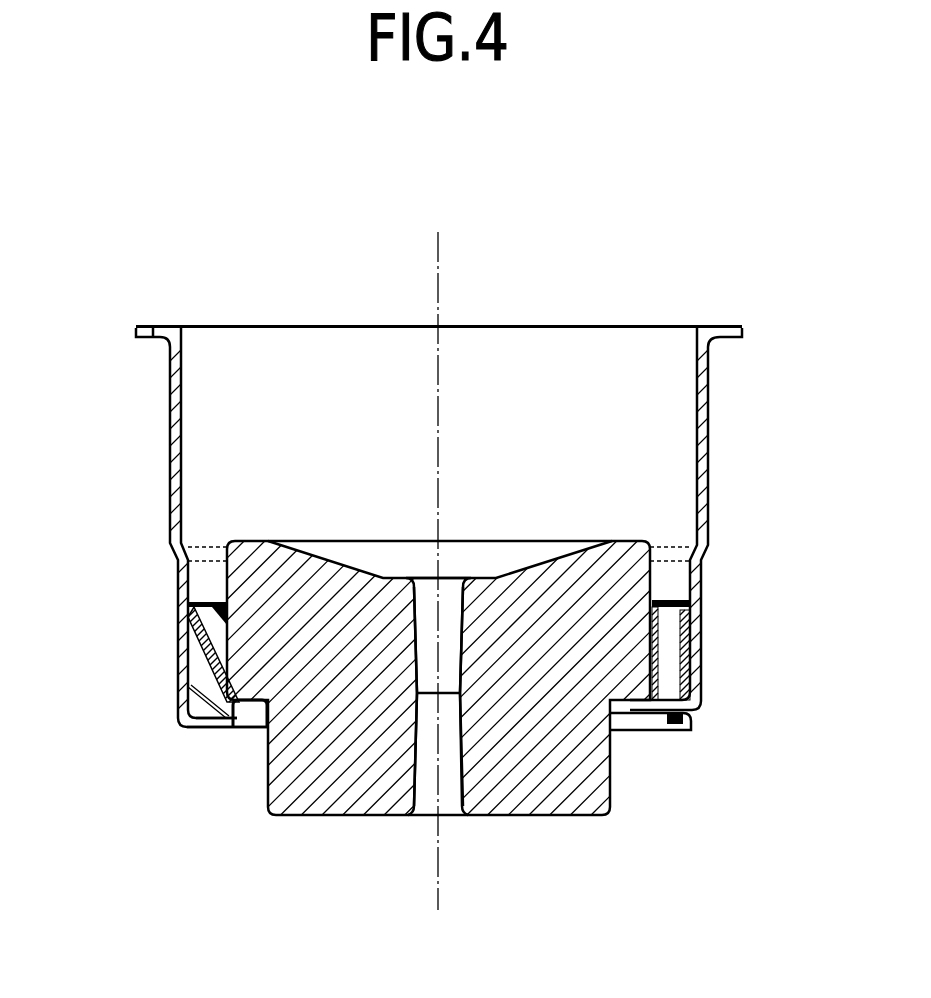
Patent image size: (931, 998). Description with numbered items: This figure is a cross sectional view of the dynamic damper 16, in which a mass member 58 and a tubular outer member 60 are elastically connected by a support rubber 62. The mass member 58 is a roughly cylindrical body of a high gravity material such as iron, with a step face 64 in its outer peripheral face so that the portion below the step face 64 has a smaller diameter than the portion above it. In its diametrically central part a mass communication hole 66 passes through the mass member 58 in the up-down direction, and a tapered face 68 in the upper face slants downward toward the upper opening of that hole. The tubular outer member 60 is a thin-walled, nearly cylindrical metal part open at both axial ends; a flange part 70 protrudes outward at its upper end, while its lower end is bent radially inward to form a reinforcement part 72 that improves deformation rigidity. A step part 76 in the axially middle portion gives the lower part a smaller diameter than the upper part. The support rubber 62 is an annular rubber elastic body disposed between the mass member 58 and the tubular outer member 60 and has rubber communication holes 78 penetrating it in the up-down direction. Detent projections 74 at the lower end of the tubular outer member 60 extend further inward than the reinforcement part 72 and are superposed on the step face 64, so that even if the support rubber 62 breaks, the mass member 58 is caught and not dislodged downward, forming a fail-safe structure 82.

The dynamic damper 16 is at (652, 290).
The mass member 58 is at (360, 822).
The tubular outer member 60 is at (166, 492).
The support rubber 62 is at (215, 643).
The step face 64 is at (633, 705).
The mass communication hole 66 is at (463, 791).
The tapered face 68 is at (348, 567).
The flange part 70 is at (720, 337).
The reinforcement part 72 is at (688, 732).
The detent projections 74 is at (228, 722).
The step part 76 is at (705, 562).
The rubber communication holes 78 is at (657, 633).
The fail-safe structure 82 is at (225, 745).